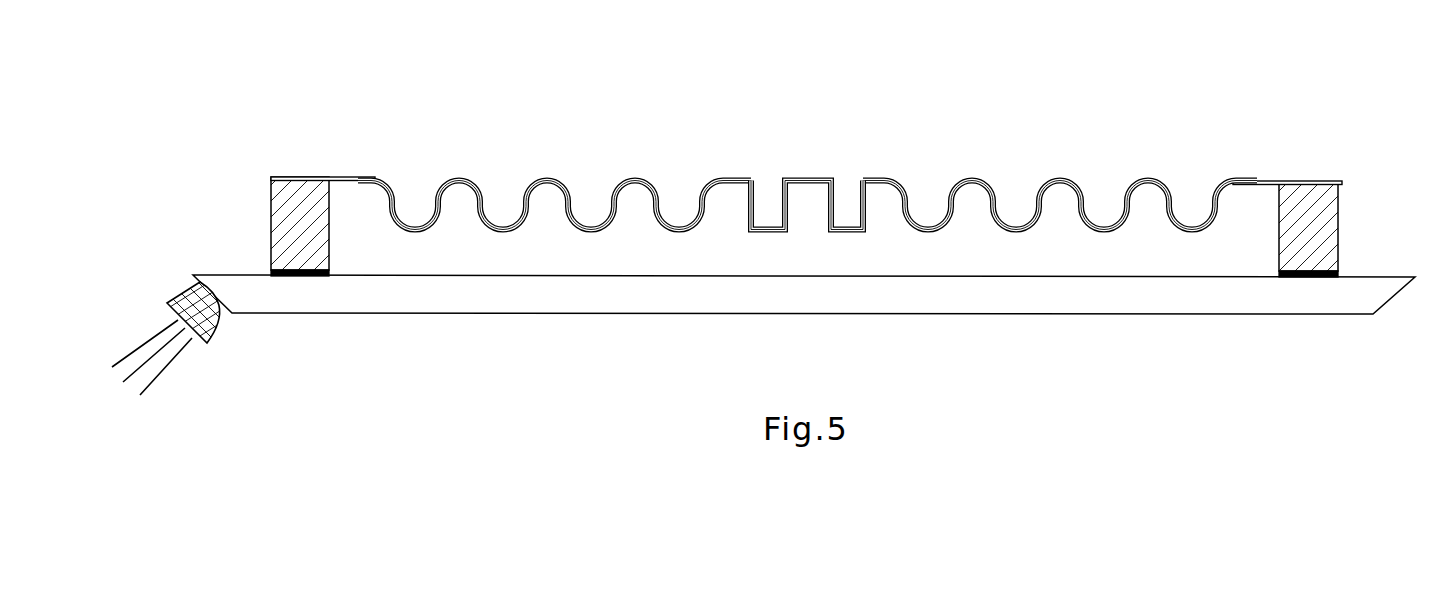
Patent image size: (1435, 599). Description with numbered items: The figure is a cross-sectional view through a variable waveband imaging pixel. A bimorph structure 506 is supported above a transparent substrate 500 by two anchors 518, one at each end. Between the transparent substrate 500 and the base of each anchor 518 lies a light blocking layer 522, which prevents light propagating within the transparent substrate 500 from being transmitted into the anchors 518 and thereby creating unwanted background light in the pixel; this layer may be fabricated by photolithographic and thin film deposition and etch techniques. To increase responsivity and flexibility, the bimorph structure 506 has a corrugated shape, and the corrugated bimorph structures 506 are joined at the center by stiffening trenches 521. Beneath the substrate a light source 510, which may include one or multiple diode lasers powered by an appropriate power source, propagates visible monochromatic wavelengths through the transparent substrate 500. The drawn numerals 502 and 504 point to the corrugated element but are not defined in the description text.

The transparent substrate 500 is at (705, 313).
The serpentine resistive trace 502 is at (807, 222).
The trace lower layer 504 is at (1115, 232).
The bimorph structure 506 is at (377, 177).
The light source 510 is at (218, 332).
The anchor 518 is at (272, 220).
The stiffening trench 521 is at (846, 195).
The light blocking layer 522 is at (300, 277).